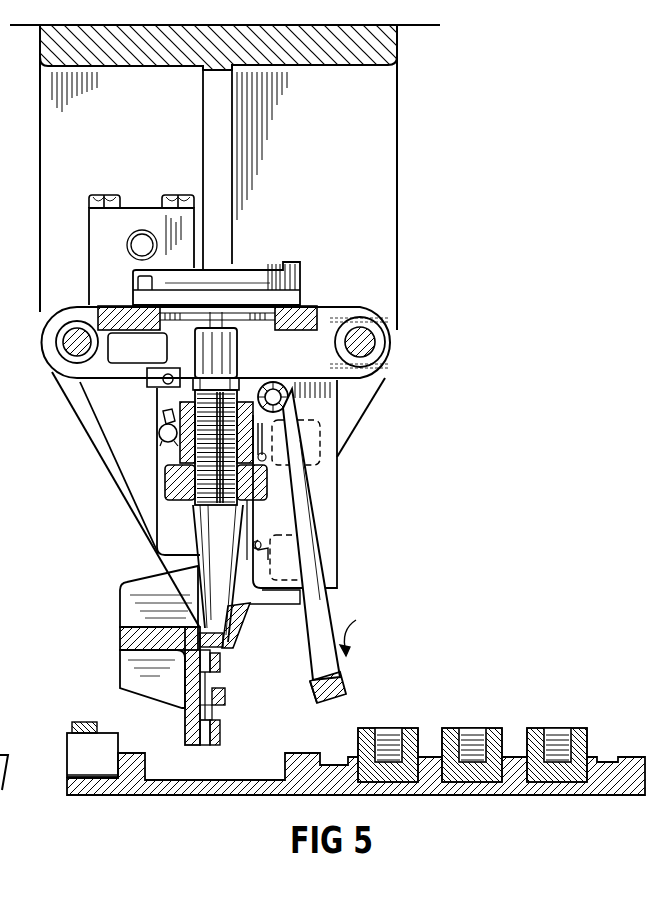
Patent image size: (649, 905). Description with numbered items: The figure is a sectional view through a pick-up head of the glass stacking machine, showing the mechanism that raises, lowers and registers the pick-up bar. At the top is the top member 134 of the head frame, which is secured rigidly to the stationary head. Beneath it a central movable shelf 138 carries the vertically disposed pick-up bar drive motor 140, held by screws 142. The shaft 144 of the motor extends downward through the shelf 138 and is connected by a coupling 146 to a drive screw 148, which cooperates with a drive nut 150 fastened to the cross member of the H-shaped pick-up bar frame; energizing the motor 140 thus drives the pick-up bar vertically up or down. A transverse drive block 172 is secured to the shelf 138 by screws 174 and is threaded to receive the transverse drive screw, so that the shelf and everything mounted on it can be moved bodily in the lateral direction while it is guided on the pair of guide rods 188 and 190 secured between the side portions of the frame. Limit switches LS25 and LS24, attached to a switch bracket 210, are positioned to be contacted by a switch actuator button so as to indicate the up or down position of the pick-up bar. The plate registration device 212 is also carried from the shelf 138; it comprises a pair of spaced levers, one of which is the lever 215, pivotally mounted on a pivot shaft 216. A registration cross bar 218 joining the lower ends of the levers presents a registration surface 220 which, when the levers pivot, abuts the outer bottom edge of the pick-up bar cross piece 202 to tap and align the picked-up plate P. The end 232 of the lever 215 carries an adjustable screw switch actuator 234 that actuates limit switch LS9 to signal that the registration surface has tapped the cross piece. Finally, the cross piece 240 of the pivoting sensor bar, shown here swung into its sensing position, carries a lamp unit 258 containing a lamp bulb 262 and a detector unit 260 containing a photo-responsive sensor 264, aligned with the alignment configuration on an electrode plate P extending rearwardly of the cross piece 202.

The top member 134 is at (330, 64).
The transverse drive block 172 is at (89, 252).
The screws 174 is at (114, 200).
The pick-up bar drive motor 140 is at (276, 268).
The screws 142 is at (300, 276).
The central movable shelf 138 is at (305, 313).
The guide rod 188 is at (378, 338).
The guide rod 190 is at (63, 348).
The limit switch LS9 is at (137, 348).
The shaft 144 is at (247, 338).
The coupling 146 is at (254, 356).
The drive screw 148 is at (208, 504).
The drive nut 150 is at (180, 457).
The adjustable screw switch actuator 234 is at (166, 414).
The end of lever 232 is at (160, 430).
The pivot shaft 216 is at (290, 395).
The switch bracket 210 is at (333, 514).
The limit switch LS25 is at (308, 446).
The limit switch LS24 is at (291, 557).
The lever 215 is at (327, 607).
The plate registration device 212 is at (364, 635).
The registration cross bar 218 is at (345, 685).
The registration surface 220 is at (311, 691).
The cross piece 240 is at (182, 662).
The lamp bulb 262 is at (247, 640).
The lamp unit 258 is at (228, 664).
The pick-up bar cross piece 202 is at (223, 698).
The plate P is at (224, 712).
The detector unit 260 is at (224, 730).
The photo-responsive sensor 264 is at (218, 744).